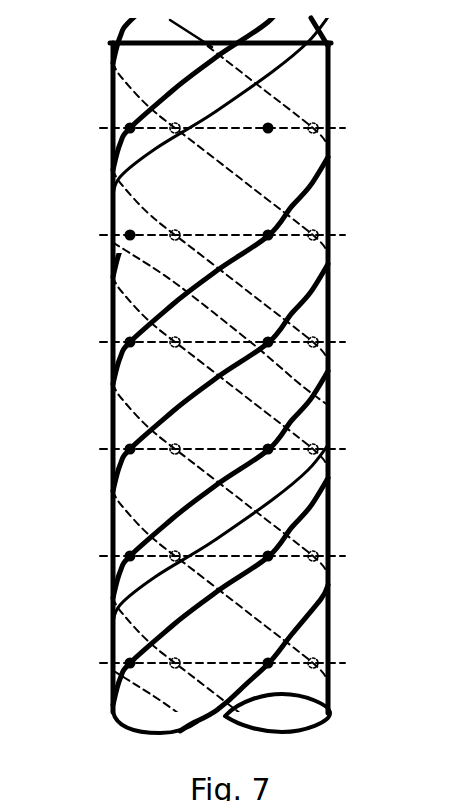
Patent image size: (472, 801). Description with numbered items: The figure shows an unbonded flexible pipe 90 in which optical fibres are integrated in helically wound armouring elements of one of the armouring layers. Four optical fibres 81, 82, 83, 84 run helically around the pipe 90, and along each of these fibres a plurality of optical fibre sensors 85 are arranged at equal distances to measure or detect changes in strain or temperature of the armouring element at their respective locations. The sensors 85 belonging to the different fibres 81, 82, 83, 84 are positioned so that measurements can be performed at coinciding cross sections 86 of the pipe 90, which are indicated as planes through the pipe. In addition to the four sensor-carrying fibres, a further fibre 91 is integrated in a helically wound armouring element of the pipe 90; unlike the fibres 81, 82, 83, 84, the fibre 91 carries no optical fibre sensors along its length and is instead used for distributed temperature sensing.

The unbonded flexible pipe 90 is at (372, 60).
The optical fibre 81 is at (315, 92).
The optical fibre 82 is at (315, 200).
The optical fibre 83 is at (318, 310).
The optical fibre 84 is at (315, 413).
The optical fibre sensors 85 is at (308, 133).
The coinciding cross sections 86 is at (99, 127).
The further fibre 91 is at (318, 470).